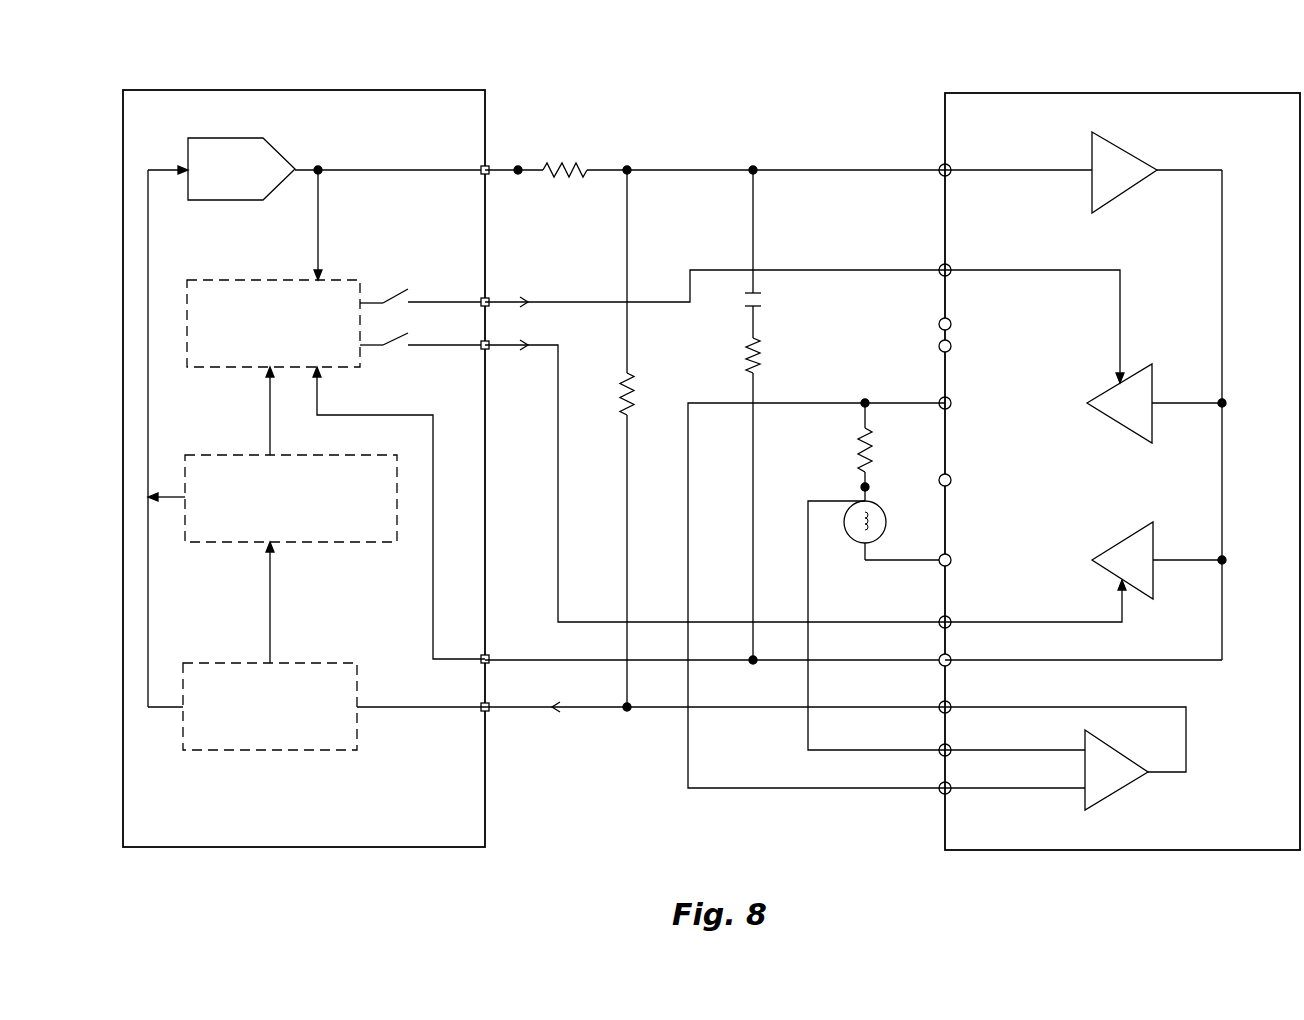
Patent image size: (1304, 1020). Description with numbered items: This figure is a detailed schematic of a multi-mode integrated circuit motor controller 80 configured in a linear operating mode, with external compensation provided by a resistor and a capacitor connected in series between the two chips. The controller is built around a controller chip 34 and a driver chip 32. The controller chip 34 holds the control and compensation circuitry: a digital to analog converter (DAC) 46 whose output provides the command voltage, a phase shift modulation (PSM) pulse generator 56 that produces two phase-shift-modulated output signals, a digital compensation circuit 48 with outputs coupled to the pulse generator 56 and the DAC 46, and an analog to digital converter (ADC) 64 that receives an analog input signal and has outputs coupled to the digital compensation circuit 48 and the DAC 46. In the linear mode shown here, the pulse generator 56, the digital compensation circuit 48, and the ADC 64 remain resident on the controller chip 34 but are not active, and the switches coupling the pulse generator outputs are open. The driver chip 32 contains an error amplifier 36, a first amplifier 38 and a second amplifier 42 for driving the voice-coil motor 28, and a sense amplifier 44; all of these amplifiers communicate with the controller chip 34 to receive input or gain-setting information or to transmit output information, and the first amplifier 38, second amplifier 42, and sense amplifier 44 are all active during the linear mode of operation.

The multi-mode integrated circuit motor controller 80 is at (139, 68).
The controller chip 34 is at (429, 90).
The driver chip 32 is at (1257, 93).
The digital to analog converter (DAC) 46 is at (225, 138).
The phase shift modulation (PSM) pulse generator 56 is at (336, 283).
The digital compensation circuit 48 is at (345, 542).
The analog to digital converter (ADC) 64 is at (334, 663).
The error amplifier 36 is at (1120, 194).
The first amplifier 38 is at (1152, 425).
The second amplifier 42 is at (1153, 585).
The sense amplifier 44 is at (1110, 796).
The voice-coil motor (VCM) 28 is at (881, 507).